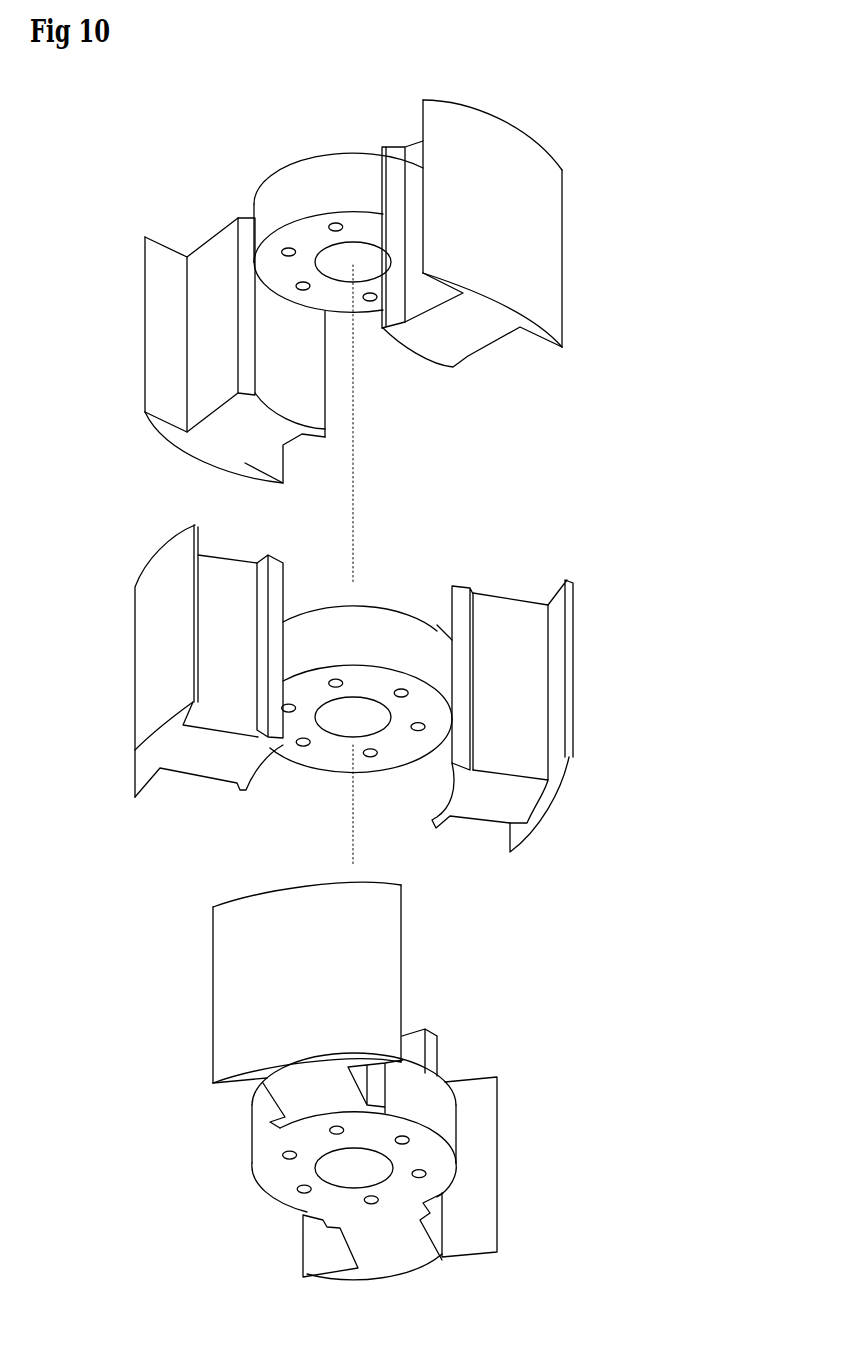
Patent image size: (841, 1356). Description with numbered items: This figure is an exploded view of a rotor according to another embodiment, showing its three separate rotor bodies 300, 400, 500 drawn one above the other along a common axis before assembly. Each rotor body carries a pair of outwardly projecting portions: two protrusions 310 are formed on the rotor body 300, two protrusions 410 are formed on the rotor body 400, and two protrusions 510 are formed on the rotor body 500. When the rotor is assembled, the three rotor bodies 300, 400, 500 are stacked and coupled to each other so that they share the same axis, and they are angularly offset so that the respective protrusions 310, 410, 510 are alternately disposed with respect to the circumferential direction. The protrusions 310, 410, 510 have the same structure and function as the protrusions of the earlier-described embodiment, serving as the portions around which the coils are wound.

The rotor body 300 is at (562, 192).
The protrusions 310 is at (526, 238).
The rotor body 400 is at (563, 660).
The protrusions 410 is at (157, 753).
The rotor body 500 is at (497, 1153).
The protrusions 510 is at (243, 997).